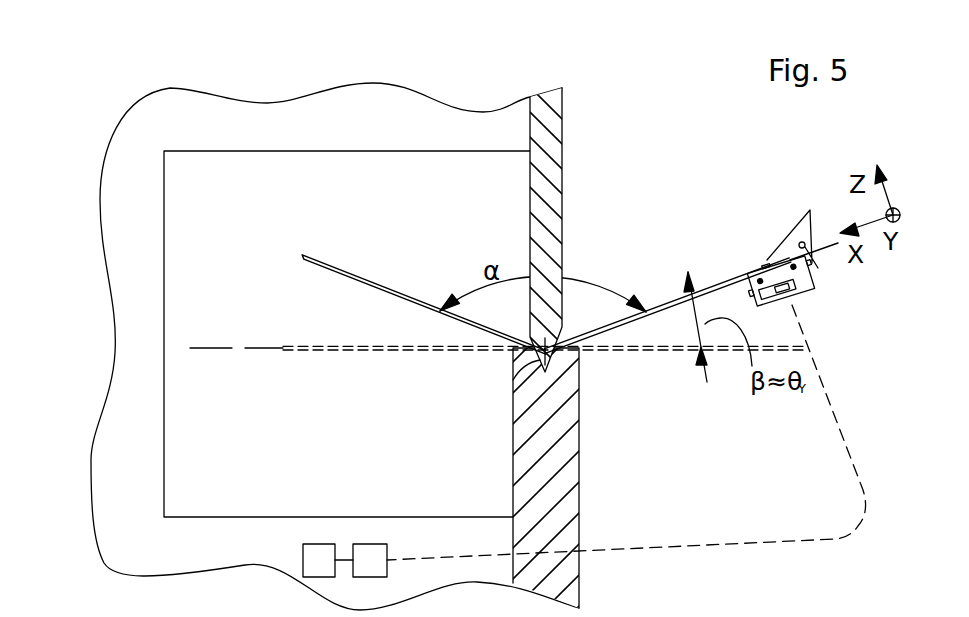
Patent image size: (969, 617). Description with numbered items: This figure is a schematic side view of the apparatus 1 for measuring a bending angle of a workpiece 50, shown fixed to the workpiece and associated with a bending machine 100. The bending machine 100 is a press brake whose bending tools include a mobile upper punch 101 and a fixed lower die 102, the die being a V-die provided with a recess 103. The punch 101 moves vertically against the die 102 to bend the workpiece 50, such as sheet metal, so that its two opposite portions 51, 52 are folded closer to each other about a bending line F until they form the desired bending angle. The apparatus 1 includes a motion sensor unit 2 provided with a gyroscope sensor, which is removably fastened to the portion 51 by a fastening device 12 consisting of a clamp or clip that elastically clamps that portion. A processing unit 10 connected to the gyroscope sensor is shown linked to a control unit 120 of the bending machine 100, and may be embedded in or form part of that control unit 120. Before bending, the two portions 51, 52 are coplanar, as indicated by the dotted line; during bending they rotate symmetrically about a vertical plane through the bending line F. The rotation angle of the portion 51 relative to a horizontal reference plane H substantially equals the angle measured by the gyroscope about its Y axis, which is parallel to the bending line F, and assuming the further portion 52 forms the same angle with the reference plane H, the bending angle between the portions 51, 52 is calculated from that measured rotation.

The bending machine 100 is at (176, 64).
The upper punch 101 is at (550, 196).
The lower die 102 is at (572, 418).
The recess 103 is at (535, 358).
The apparatus 1 is at (533, 307).
The workpiece 50 is at (533, 329).
The portion 51 is at (674, 306).
The further portion 52 is at (350, 276).
The fastening device 12 is at (790, 240).
The motion sensor unit 2 is at (802, 287).
The processing unit 10 is at (363, 553).
The control unit 120 is at (320, 553).
The bending line F is at (533, 355).
The horizontal reference plane H is at (242, 348).